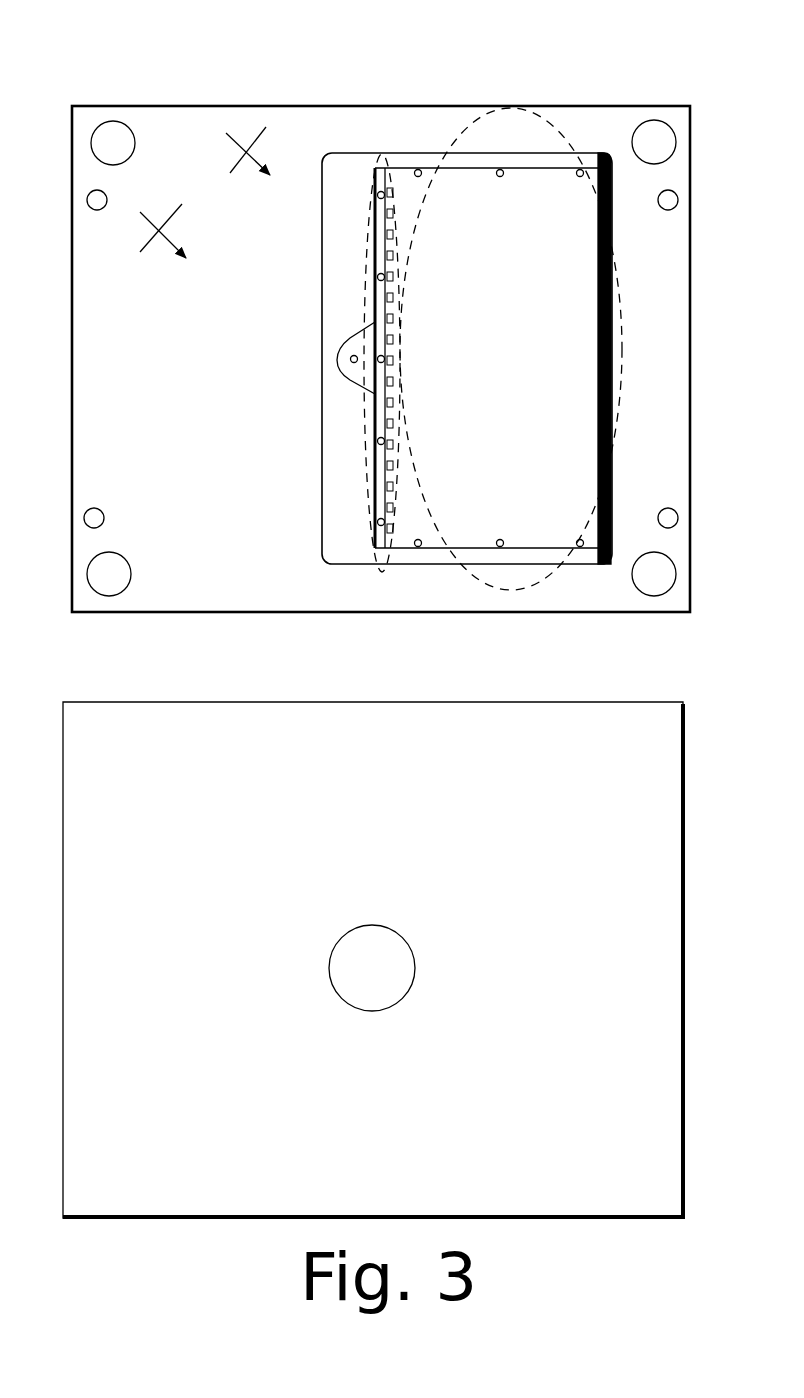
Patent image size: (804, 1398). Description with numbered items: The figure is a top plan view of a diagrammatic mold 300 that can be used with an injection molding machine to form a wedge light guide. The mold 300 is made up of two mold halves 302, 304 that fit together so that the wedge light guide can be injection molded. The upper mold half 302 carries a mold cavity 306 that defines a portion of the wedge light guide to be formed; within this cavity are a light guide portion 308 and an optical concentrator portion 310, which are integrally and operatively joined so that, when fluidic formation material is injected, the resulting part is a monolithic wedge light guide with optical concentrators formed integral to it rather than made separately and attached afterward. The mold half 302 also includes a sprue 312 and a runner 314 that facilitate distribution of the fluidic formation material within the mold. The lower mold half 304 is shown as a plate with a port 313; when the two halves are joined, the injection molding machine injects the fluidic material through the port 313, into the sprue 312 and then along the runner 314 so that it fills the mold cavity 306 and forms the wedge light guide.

The mold 300 is at (166, 72).
The mold half 302 is at (398, 106).
The mold half 304 is at (371, 701).
The mold cavity 306 is at (534, 152).
The light guide portion 308 is at (452, 148).
The optical concentrator portion 310 is at (363, 273).
The sprue 312 is at (345, 348).
The port 313 is at (372, 926).
The runner 314 is at (380, 487).